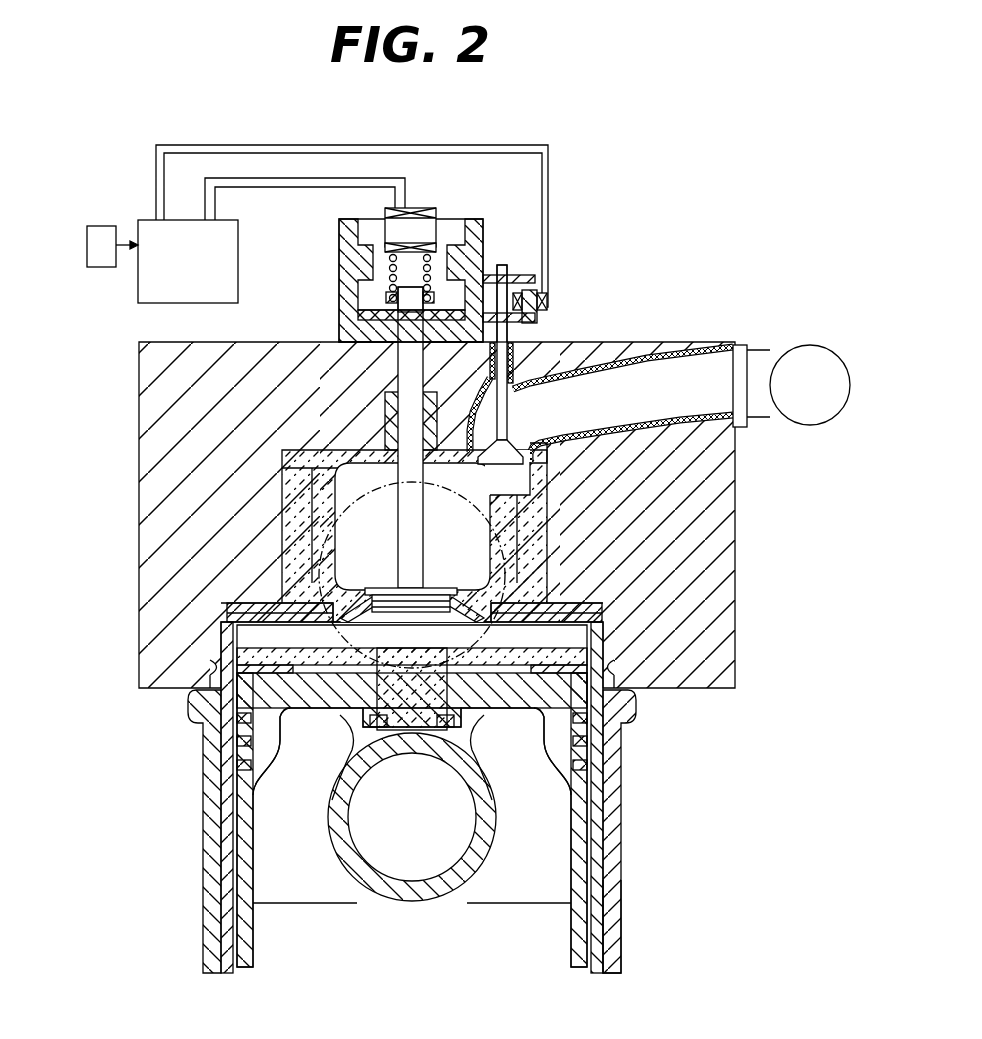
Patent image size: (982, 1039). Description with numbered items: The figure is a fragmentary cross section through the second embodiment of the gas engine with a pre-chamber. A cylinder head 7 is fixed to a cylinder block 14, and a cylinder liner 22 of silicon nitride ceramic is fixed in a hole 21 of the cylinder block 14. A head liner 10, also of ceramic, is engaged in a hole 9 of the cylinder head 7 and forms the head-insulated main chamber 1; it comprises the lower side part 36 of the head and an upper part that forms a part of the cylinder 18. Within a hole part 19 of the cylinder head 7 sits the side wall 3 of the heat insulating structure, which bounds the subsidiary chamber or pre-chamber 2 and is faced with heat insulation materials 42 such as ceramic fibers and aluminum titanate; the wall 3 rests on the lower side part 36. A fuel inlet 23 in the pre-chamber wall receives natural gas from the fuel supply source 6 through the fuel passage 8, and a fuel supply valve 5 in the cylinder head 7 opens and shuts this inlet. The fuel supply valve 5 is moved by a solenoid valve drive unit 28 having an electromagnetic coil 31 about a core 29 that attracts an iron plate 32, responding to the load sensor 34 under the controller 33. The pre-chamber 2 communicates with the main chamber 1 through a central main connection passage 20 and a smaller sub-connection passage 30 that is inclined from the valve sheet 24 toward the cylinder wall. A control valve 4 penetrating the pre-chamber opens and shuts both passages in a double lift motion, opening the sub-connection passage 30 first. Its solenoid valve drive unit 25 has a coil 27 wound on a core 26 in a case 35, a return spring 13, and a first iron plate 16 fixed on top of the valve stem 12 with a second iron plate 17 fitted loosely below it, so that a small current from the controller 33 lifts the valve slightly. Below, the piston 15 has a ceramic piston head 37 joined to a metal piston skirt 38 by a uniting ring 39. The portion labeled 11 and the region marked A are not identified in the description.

The main chamber 1 is at (317, 645).
The subsidiary chamber 2 is at (530, 522).
The side wall 3 is at (317, 497).
The control valve 4 is at (416, 577).
The fuel supply valve 5 is at (508, 405).
The fuel supply source 6 is at (822, 404).
The cylinder head 7 is at (150, 420).
The fuel passage 8 is at (690, 365).
The hole 9 is at (604, 645).
The head liner 10 is at (618, 625).
The head lower portion 11 is at (253, 600).
The valve stem 12 is at (395, 416).
The return spring 13 is at (383, 257).
The cylinder block 14 is at (207, 865).
The piston 15 is at (293, 722).
The first iron plate 16 is at (398, 300).
The second iron plate 17 is at (358, 315).
The cylinder 18 is at (245, 868).
The hole part 19 is at (282, 533).
The main connection passage 20 is at (443, 583).
The hole 21 is at (604, 900).
The cylinder liner 22 is at (223, 817).
The fuel inlet 23 is at (537, 440).
The valve sheet 24 is at (385, 583).
The solenoid valve drive unit 25 is at (474, 208).
The core 26 is at (455, 219).
The coil 27 is at (415, 212).
The solenoid valve drive unit 28 is at (533, 279).
The core 29 is at (538, 322).
The sub-connection passage 30 is at (345, 560).
The electromagnetic coil 31 is at (550, 302).
The iron plate 32 is at (515, 277).
The controller 33 is at (204, 281).
The load sensor 34 is at (87, 258).
The case 35 is at (387, 285).
The lower side part of the head 36 is at (225, 642).
The piston head 37 is at (530, 673).
The piston skirt 38 is at (268, 717).
The uniting ring 39 is at (388, 735).
The heat insulation materials 42 is at (287, 477).
The detail region A is at (330, 422).